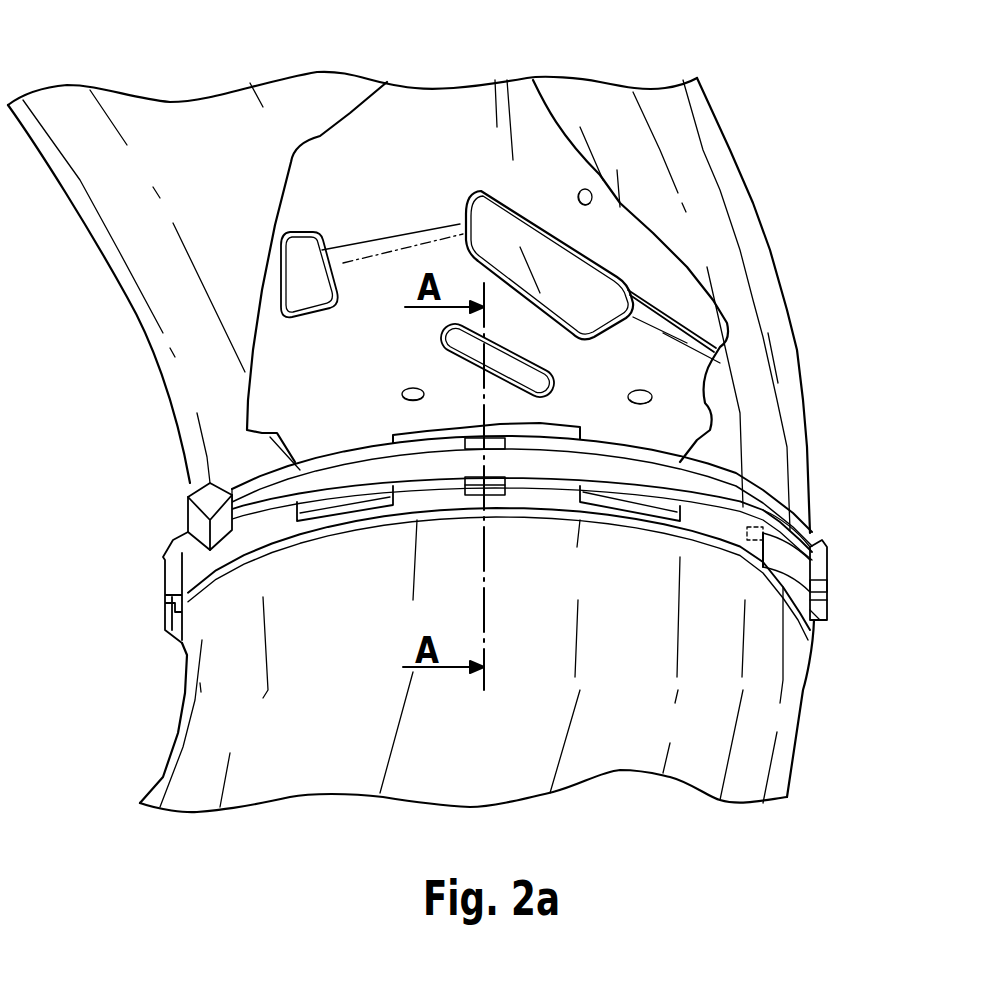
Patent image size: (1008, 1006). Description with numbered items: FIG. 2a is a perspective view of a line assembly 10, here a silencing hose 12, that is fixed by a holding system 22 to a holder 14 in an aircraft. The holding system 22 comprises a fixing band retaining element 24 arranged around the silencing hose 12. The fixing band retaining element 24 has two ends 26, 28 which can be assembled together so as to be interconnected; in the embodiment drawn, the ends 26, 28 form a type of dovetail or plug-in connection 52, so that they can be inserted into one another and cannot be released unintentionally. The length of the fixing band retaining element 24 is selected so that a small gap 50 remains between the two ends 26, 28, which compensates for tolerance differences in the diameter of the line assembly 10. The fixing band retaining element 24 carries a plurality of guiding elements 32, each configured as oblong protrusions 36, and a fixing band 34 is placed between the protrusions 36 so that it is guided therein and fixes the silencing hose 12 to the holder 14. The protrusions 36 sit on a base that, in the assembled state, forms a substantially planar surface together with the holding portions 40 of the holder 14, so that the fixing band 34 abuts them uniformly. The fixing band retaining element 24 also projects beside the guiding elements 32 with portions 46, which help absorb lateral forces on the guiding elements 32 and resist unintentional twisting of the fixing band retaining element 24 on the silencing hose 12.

The line assembly 10 is at (762, 170).
The silencing hose 12 is at (763, 392).
The holder 14 is at (420, 160).
The holding system 22 is at (364, 547).
The fixing band retaining element 24 is at (262, 497).
The end 26 is at (717, 527).
The end 28 is at (785, 570).
The guiding element 32 is at (173, 618).
The fixing band 34 is at (800, 540).
The oblong protrusion 36 is at (465, 477).
The holding portion 40 is at (625, 505).
The projecting portion 46 is at (497, 436).
The gap 50 is at (813, 600).
The plug-in connection 52 is at (783, 523).